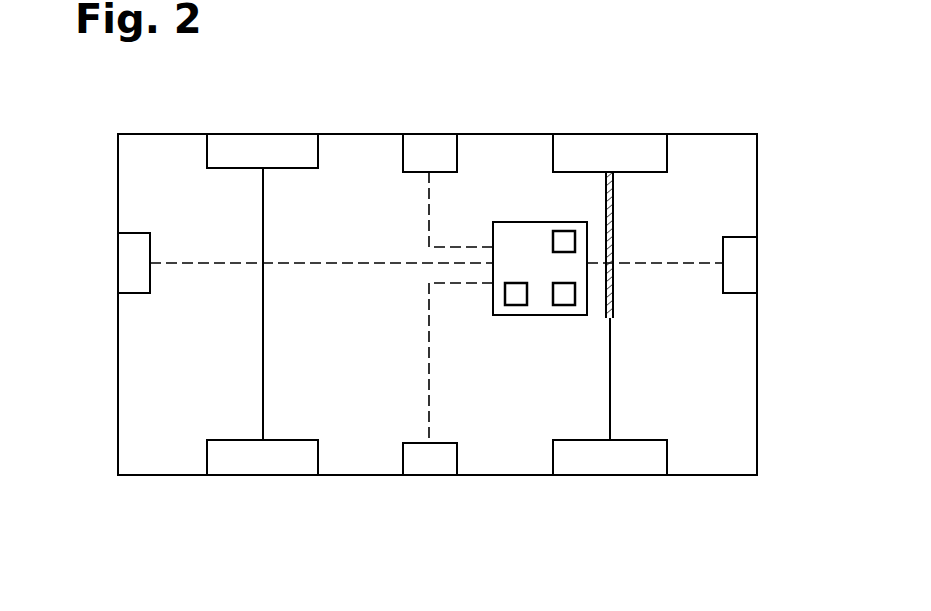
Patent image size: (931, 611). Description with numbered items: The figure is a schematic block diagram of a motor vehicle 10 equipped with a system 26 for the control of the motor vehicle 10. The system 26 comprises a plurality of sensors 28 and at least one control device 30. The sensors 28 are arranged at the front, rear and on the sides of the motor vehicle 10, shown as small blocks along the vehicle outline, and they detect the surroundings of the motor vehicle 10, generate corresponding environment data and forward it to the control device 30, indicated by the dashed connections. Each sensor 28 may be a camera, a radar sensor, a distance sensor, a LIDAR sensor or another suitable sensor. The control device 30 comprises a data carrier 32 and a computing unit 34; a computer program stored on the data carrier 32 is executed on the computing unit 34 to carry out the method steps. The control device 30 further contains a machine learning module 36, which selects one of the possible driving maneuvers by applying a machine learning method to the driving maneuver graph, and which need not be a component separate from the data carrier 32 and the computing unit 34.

The motor vehicle 10 is at (692, 120).
The system for the control of the motor vehicle 26 is at (508, 200).
The sensors 28 is at (429, 155).
The control device 30 is at (537, 222).
The data carrier 32 is at (517, 297).
The computing unit 34 is at (565, 297).
The machine learning module 36 is at (563, 231).